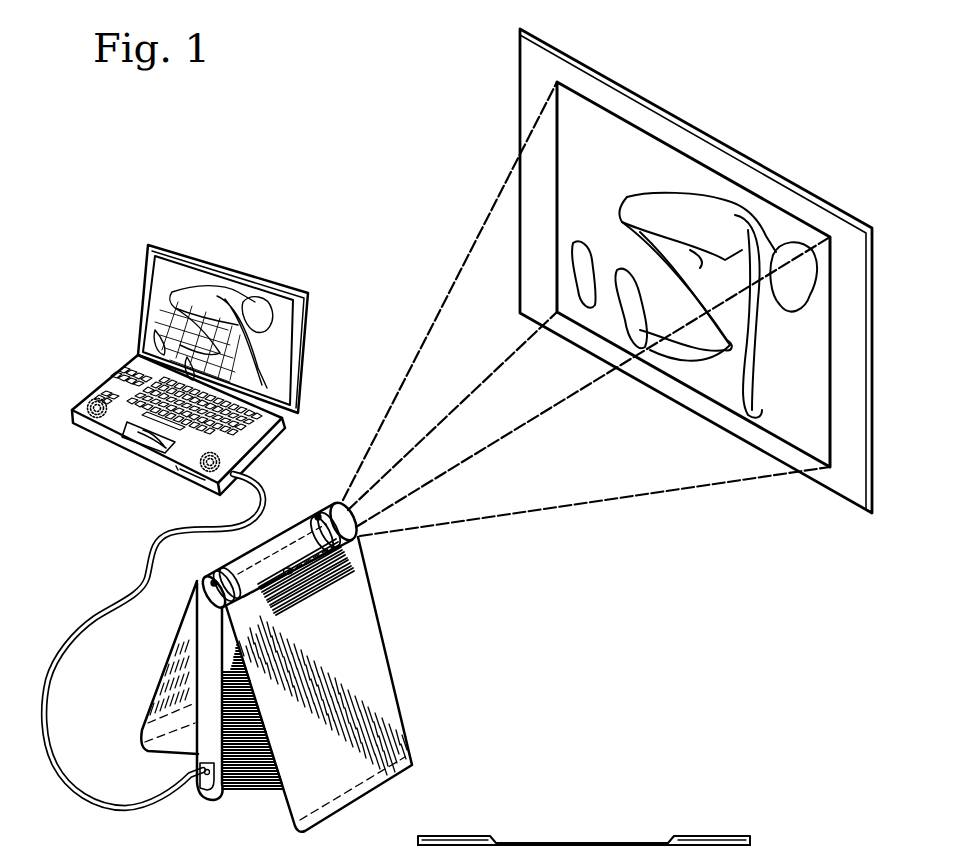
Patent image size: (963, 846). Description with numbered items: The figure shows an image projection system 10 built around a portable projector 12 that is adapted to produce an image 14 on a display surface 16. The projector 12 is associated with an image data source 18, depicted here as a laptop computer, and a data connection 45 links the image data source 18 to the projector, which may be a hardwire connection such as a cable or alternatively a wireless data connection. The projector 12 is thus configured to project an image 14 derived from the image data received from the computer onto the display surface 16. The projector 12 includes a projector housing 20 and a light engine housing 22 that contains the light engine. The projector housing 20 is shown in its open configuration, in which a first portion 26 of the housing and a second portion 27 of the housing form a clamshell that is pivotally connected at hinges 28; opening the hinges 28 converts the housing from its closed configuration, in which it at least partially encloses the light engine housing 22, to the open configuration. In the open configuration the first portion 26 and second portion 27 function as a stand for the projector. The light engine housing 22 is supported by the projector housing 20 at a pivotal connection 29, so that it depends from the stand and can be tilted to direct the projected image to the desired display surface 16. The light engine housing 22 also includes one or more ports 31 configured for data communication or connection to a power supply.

The image projection system 10 is at (305, 183).
The portable projector 12 is at (472, 612).
The image 14 is at (817, 380).
The display surface 16 is at (525, 108).
The image data source 18 is at (104, 333).
The projector housing 20 is at (382, 616).
The light engine housing 22 is at (243, 752).
The first portion 26 is at (156, 677).
The second portion 27 is at (404, 719).
The hinges 28 is at (322, 504).
The pivotal connection 29 is at (598, 843).
The ports 31 is at (205, 764).
The data connection 45 is at (108, 604).